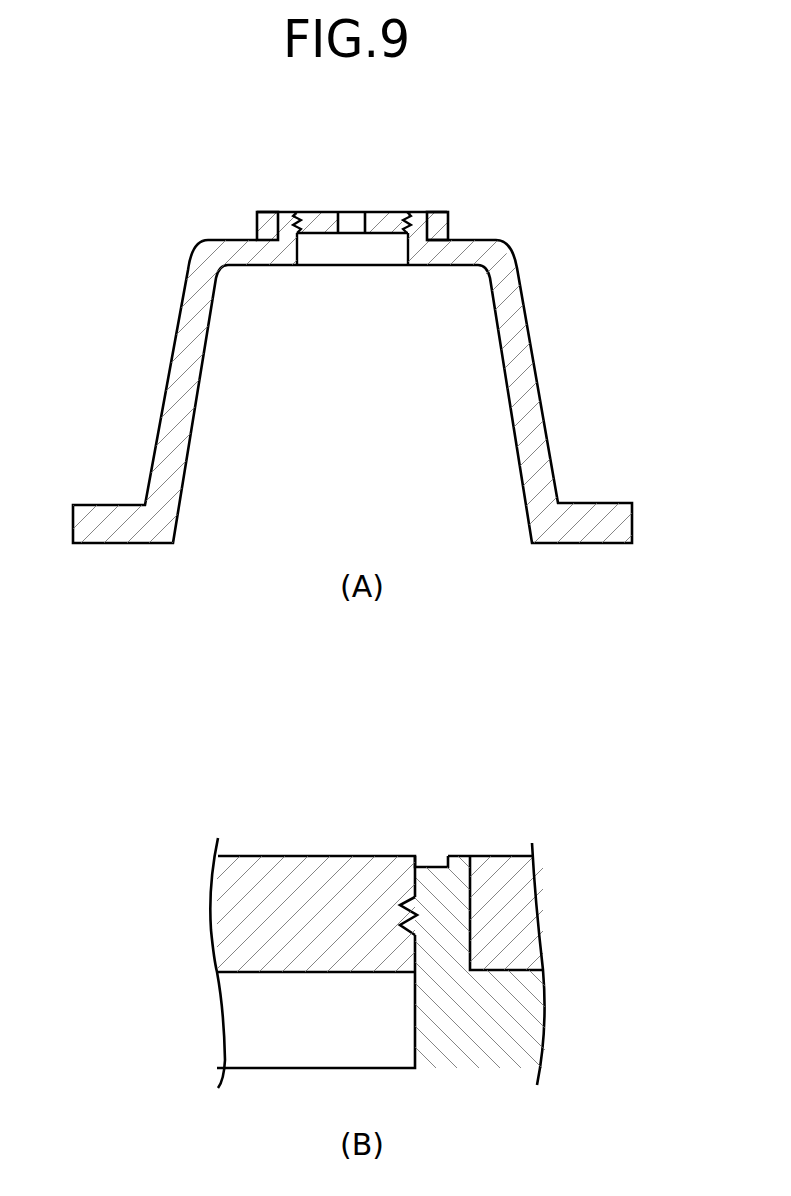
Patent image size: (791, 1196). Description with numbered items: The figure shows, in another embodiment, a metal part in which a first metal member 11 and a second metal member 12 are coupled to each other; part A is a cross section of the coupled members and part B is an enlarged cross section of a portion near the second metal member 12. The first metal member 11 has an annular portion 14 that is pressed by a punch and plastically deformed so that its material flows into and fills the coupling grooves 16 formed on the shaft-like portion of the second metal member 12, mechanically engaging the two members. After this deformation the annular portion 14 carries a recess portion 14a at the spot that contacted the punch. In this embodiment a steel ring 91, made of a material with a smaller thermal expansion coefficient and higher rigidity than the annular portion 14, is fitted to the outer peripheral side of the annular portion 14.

The first metal member 11 is at (190, 254).
The second metal member 12 is at (307, 212).
The annular portion 14 is at (273, 227).
The recess portion 14a is at (430, 866).
The coupling grooves 16 is at (407, 898).
The steel ring 91 is at (440, 225).